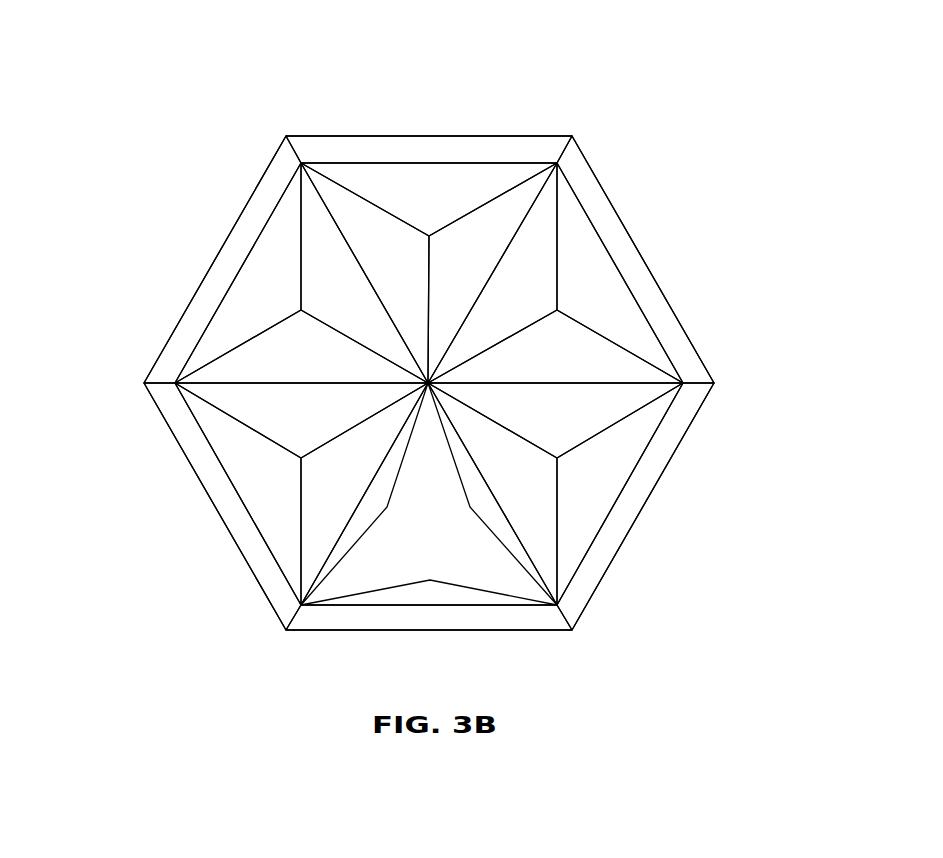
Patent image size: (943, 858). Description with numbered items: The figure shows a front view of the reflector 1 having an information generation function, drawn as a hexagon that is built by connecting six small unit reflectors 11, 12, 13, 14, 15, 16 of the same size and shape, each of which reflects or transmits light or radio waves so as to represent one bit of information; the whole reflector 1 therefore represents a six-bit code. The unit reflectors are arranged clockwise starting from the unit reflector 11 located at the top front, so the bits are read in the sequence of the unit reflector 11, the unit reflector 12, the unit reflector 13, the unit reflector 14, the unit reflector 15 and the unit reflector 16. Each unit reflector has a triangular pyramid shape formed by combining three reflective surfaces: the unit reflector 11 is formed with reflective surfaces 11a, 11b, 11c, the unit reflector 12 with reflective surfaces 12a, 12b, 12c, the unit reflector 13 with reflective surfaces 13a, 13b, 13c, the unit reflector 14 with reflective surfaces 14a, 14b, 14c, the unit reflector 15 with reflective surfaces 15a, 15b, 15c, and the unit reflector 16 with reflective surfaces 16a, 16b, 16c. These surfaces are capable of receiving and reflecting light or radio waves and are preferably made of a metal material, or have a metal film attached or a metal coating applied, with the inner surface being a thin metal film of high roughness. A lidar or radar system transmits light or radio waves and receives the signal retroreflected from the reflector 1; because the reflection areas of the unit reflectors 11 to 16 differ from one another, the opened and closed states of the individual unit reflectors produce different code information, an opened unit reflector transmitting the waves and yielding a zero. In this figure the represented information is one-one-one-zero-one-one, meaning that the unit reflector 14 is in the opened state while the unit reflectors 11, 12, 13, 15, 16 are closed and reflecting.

The reflector 1 is at (700, 112).
The unit reflector 11 is at (515, 160).
The reflective surface 11a is at (338, 198).
The reflective surface 11b is at (350, 178).
The reflective surface 11c is at (518, 203).
The unit reflector 12 is at (670, 357).
The reflective surface 12a is at (538, 255).
The reflective surface 12b is at (607, 290).
The reflective surface 12c is at (610, 357).
The unit reflector 13 is at (587, 558).
The reflective surface 13a is at (632, 400).
The reflective surface 13b is at (622, 457).
The reflective surface 13c is at (543, 498).
The unit reflector 14 is at (350, 605).
The reflective surface 14a is at (502, 527).
The reflective surface 14b is at (437, 593).
The reflective surface 14c is at (375, 507).
The unit reflector 15 is at (190, 413).
The reflective surface 15a is at (313, 532).
The reflective surface 15b is at (262, 495).
The reflective surface 15c is at (245, 410).
The unit reflector 16 is at (273, 210).
The reflective surface 16a is at (237, 367).
The reflective surface 16b is at (240, 305).
The reflective surface 16c is at (317, 277).